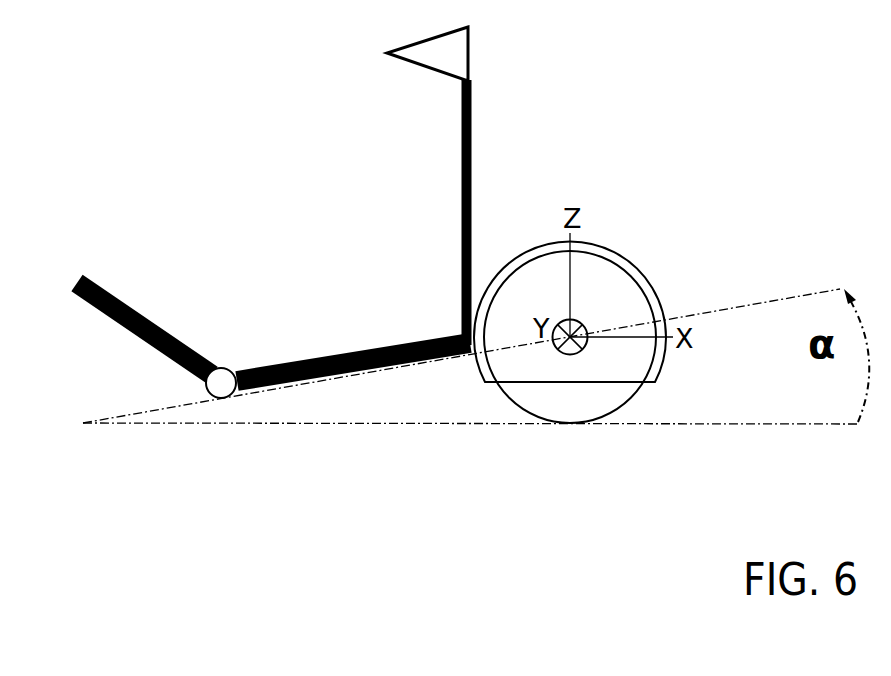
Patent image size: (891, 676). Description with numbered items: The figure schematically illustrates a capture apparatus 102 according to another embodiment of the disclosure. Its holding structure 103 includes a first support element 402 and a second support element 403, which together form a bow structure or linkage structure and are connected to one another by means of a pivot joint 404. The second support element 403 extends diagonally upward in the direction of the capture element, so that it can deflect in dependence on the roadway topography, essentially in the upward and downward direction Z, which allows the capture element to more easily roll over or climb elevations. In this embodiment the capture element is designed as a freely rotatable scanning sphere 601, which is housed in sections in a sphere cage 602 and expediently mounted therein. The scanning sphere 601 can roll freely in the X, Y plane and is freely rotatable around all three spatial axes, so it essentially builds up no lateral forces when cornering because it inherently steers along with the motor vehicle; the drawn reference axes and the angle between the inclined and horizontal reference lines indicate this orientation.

The capture apparatus 102 is at (643, 312).
The holding structure 103 is at (260, 326).
The first support element 402 is at (148, 348).
The second support element 403 is at (320, 358).
The pivot joint 404 is at (213, 387).
The scanning sphere 601 is at (563, 407).
The sphere cage 602 is at (645, 283).